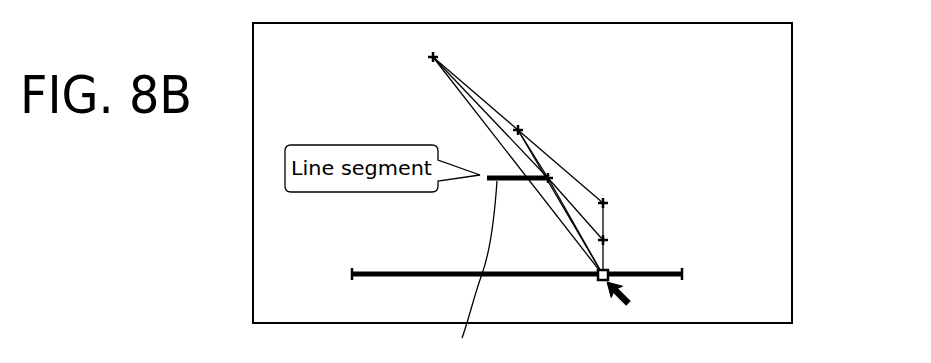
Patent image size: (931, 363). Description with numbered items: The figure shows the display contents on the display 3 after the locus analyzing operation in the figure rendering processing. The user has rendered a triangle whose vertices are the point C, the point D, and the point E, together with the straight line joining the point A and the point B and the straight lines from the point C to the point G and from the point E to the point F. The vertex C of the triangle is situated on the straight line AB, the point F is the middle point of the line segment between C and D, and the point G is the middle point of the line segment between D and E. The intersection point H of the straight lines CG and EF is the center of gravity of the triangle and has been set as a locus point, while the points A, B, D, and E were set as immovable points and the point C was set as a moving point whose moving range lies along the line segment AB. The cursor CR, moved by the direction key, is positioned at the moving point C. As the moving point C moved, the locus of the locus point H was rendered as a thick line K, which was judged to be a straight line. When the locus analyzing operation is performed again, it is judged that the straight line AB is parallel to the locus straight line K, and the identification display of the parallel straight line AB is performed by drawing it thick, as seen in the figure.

The display 3 is at (792, 132).
The point E is at (423, 46).
The point G is at (526, 117).
The point H is at (557, 168).
The point D is at (615, 209).
The point F is at (614, 244).
The point C is at (592, 292).
The point A is at (352, 289).
The point B is at (685, 291).
The thick line K is at (476, 272).
The cursor CR is at (628, 306).